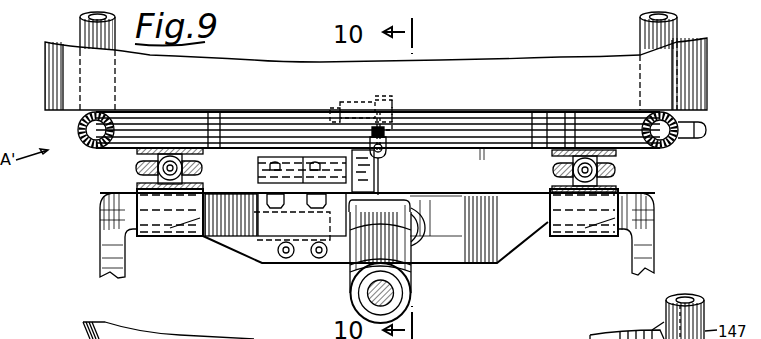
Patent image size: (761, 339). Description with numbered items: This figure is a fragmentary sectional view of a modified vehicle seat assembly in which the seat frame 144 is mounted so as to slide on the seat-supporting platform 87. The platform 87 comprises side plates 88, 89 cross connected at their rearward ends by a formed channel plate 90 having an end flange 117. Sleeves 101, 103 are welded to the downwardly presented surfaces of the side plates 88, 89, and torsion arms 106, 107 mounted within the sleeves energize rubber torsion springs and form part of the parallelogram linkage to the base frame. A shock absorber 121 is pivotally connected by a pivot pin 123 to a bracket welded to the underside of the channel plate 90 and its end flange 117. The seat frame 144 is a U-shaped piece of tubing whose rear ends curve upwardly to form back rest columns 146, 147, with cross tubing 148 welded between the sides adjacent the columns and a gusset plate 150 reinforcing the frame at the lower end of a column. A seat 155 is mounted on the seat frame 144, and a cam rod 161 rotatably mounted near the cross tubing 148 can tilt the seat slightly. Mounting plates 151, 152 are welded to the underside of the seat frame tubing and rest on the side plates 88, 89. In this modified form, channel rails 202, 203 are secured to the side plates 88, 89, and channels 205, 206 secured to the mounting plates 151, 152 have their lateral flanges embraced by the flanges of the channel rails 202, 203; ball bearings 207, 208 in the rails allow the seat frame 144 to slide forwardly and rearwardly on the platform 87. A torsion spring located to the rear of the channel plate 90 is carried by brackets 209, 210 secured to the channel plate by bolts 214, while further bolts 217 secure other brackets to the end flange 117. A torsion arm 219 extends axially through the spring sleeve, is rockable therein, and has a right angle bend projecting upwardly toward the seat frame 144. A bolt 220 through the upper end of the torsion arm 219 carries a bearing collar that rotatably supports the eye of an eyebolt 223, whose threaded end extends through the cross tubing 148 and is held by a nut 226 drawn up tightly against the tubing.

The seat-supporting platform 87 is at (548, 186).
The side plate 88 is at (616, 188).
The side plate 89 is at (137, 186).
The formed channel plate 90 is at (478, 264).
The sleeve 101 is at (548, 222).
The sleeve 103 is at (207, 234).
The torsion arm 106 is at (640, 247).
The torsion arm 107 is at (105, 256).
The end flange 117 is at (224, 243).
The shock absorber 121 is at (405, 268).
The pivot pin 123 is at (425, 224).
The seat frame 144 is at (484, 112).
The back rest column 146 is at (676, 33).
The back rest column 147 is at (80, 30).
The cross tubing 148 is at (470, 150).
The gusset plate 150 is at (664, 330).
The mounting plate 151 is at (158, 148).
The mounting plate 152 is at (566, 152).
The seat 155 is at (253, 42).
The cam rod 161 is at (514, 130).
The channel rail 202 is at (143, 168).
The channel rail 203 is at (560, 170).
The channel 205 is at (178, 155).
The channel 206 is at (590, 157).
The ball bearing 207 is at (203, 172).
The ball bearing 208 is at (614, 176).
The bracket 209 is at (280, 158).
The bracket 210 is at (320, 158).
The bolt 214 is at (316, 209).
The bolt 217 is at (316, 258).
The torsion arm 219 is at (372, 174).
The bolt 220 is at (396, 102).
The eyebolt 223 is at (378, 100).
The nut 226 is at (388, 150).